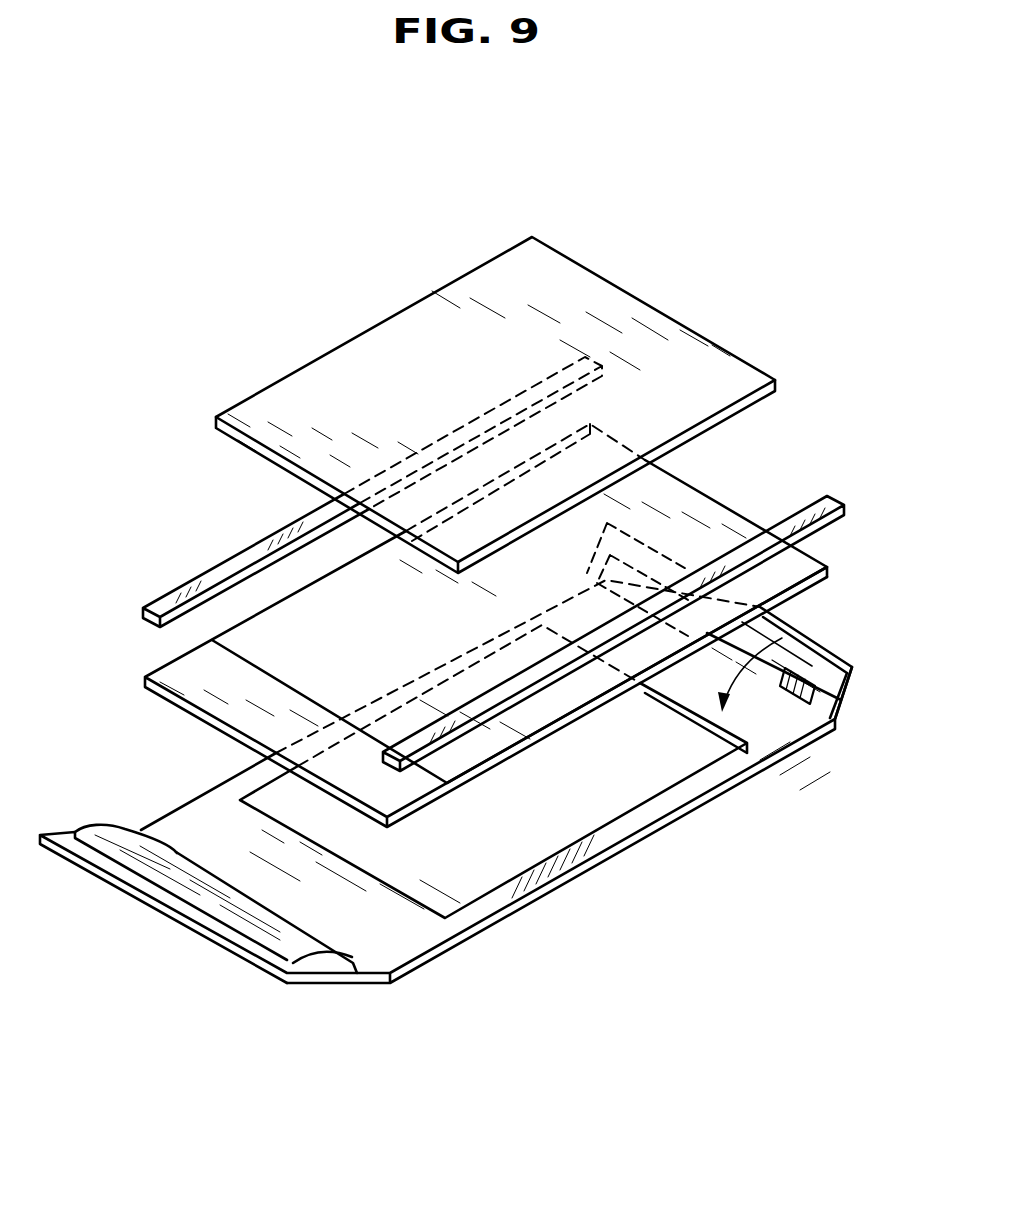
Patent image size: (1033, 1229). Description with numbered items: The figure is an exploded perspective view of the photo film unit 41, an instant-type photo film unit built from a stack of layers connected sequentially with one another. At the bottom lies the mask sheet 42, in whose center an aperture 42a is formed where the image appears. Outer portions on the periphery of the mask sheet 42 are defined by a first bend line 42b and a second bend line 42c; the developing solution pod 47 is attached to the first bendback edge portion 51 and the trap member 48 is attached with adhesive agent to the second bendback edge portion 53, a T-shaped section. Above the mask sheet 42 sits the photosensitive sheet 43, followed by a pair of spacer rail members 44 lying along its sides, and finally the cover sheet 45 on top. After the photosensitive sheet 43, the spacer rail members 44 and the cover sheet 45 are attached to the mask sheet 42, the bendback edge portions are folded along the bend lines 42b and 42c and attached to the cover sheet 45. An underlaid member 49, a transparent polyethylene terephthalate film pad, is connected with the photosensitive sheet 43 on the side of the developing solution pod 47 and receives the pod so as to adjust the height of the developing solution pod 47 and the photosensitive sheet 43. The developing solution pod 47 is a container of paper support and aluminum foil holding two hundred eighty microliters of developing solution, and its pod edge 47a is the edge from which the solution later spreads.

The photo film unit 41 is at (455, 215).
The mask sheet 42 is at (446, 958).
The aperture 42a is at (567, 837).
The first bend line 42b is at (272, 900).
The second bend line 42c is at (800, 741).
The photosensitive sheet 43 is at (710, 490).
The spacer rail members 44 is at (835, 493).
The cover sheet 45 is at (630, 294).
The developing solution pod 47 is at (190, 902).
The pod edge 47a is at (176, 850).
The trap member 48 is at (797, 656).
The underlaid member 49 is at (150, 676).
The first bendback edge portion 51 is at (343, 986).
The second bendback edge portion 53 is at (822, 690).